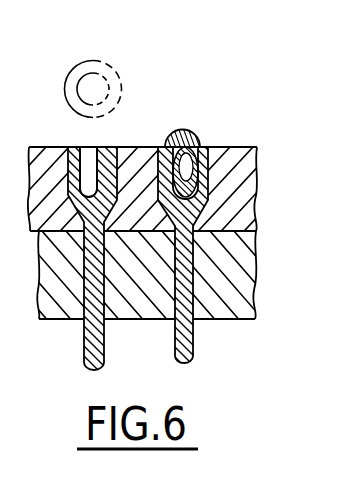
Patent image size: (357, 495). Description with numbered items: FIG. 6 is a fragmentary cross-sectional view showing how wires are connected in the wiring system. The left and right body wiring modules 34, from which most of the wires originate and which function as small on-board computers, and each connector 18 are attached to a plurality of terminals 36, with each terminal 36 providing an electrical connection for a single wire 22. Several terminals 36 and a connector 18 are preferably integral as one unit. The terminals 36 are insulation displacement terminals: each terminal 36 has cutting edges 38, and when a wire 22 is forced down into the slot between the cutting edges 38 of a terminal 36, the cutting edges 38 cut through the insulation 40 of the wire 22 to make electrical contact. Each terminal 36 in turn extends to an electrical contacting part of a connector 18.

The connector 18 is at (242, 271).
The wire 22 is at (118, 51).
The body wiring module 34 is at (110, 153).
The terminal 36 is at (247, 183).
The cutting edge 38 is at (102, 151).
The insulation 40 is at (79, 62).